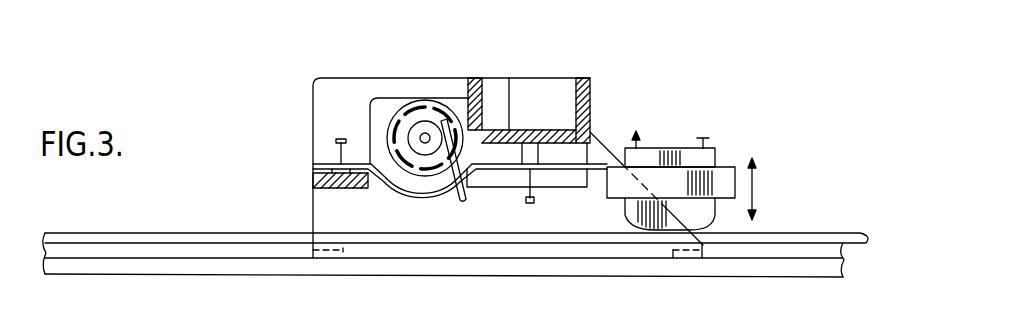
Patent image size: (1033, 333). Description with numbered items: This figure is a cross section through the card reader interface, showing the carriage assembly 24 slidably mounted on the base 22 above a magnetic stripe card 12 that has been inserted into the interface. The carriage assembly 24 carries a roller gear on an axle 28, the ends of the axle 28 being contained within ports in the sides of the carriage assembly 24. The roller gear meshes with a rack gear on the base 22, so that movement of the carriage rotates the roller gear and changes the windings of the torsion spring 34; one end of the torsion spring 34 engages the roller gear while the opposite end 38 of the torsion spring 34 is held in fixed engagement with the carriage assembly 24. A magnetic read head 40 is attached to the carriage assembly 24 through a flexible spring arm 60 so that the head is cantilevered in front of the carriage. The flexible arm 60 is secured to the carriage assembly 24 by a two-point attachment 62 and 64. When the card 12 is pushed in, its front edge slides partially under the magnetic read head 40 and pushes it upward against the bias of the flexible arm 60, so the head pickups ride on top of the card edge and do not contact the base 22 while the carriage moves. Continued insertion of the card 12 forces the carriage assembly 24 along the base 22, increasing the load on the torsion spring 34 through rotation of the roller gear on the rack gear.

The magnetic stripe card 12 is at (847, 231).
The base 22 is at (796, 283).
The carriage assembly 24 is at (581, 78).
The axle 28 is at (410, 120).
The torsion spring 34 is at (393, 120).
The opposite end of the torsion spring 38 is at (464, 203).
The magnetic read head 40 is at (728, 166).
The flexible spring arm 60 is at (602, 163).
The attachment point 62 is at (531, 150).
The attachment point 64 is at (313, 172).